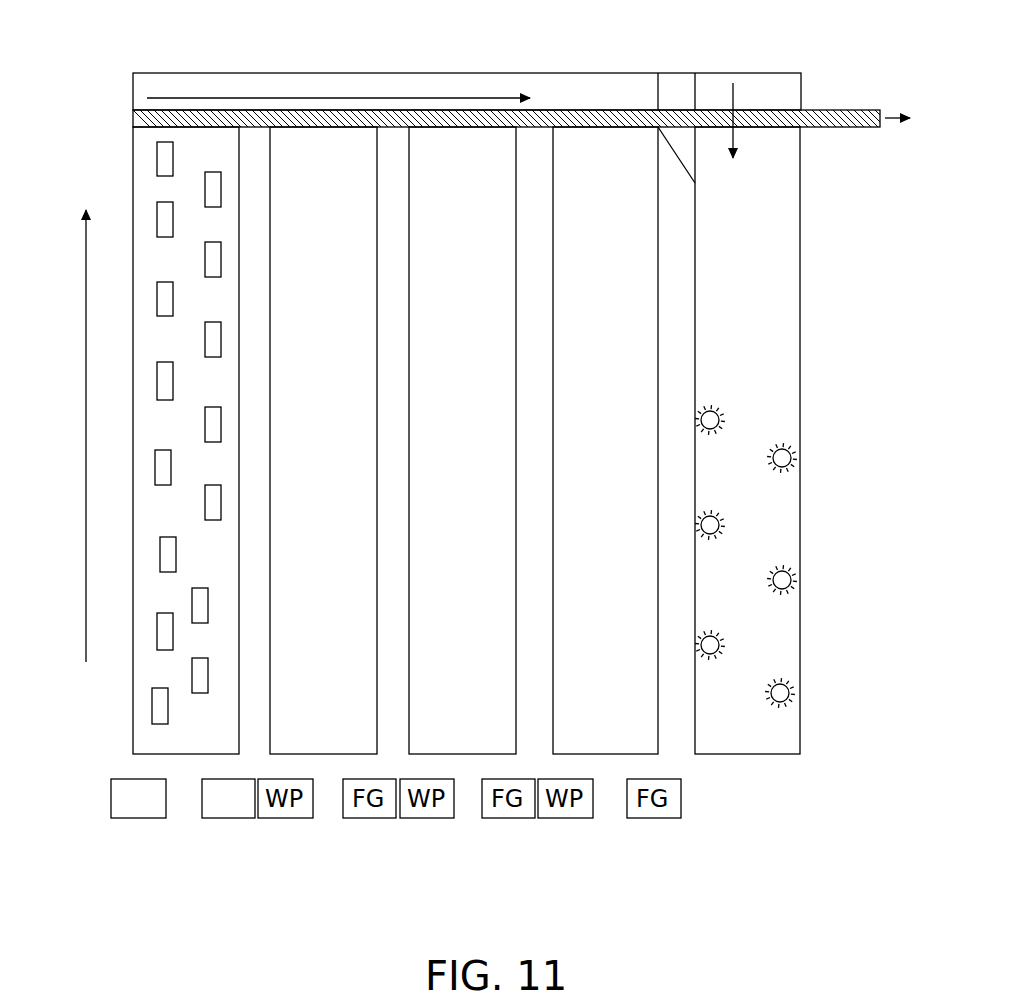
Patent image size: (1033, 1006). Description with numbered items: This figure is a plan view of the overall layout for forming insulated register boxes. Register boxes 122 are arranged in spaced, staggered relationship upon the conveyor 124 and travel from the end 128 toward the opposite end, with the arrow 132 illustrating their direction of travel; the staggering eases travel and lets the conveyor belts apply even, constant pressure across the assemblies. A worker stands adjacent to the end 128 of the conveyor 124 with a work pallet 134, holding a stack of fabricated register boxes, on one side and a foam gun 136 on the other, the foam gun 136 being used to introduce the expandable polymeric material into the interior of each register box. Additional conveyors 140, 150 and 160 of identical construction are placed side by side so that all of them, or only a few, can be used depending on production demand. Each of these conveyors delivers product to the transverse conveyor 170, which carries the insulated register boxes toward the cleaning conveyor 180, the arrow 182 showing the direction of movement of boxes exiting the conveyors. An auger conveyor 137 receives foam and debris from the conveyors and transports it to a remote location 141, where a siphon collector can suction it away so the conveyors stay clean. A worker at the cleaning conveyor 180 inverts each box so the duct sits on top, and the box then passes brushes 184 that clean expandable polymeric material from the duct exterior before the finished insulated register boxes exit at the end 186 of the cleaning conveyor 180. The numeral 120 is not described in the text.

The work pieces 120 is at (840, 191).
The register boxes 122 is at (155, 465).
The conveyor 124 is at (146, 410).
The end of the conveyor 128 is at (133, 740).
The arrow 132 is at (86, 397).
The work pallet 134 is at (798, 460).
The foam gun 136 is at (232, 820).
The auger conveyor 137 is at (133, 117).
The conveyor 140 is at (346, 481).
The remote location 141 is at (922, 118).
The conveyor 150 is at (476, 428).
The conveyor 160 is at (623, 437).
The transverse conveyor 170 is at (595, 86).
The cleaning conveyor 180 is at (795, 95).
The arrow 182 is at (470, 96).
The brushes 184 is at (798, 588).
The end of the cleaning conveyor 186 is at (755, 762).